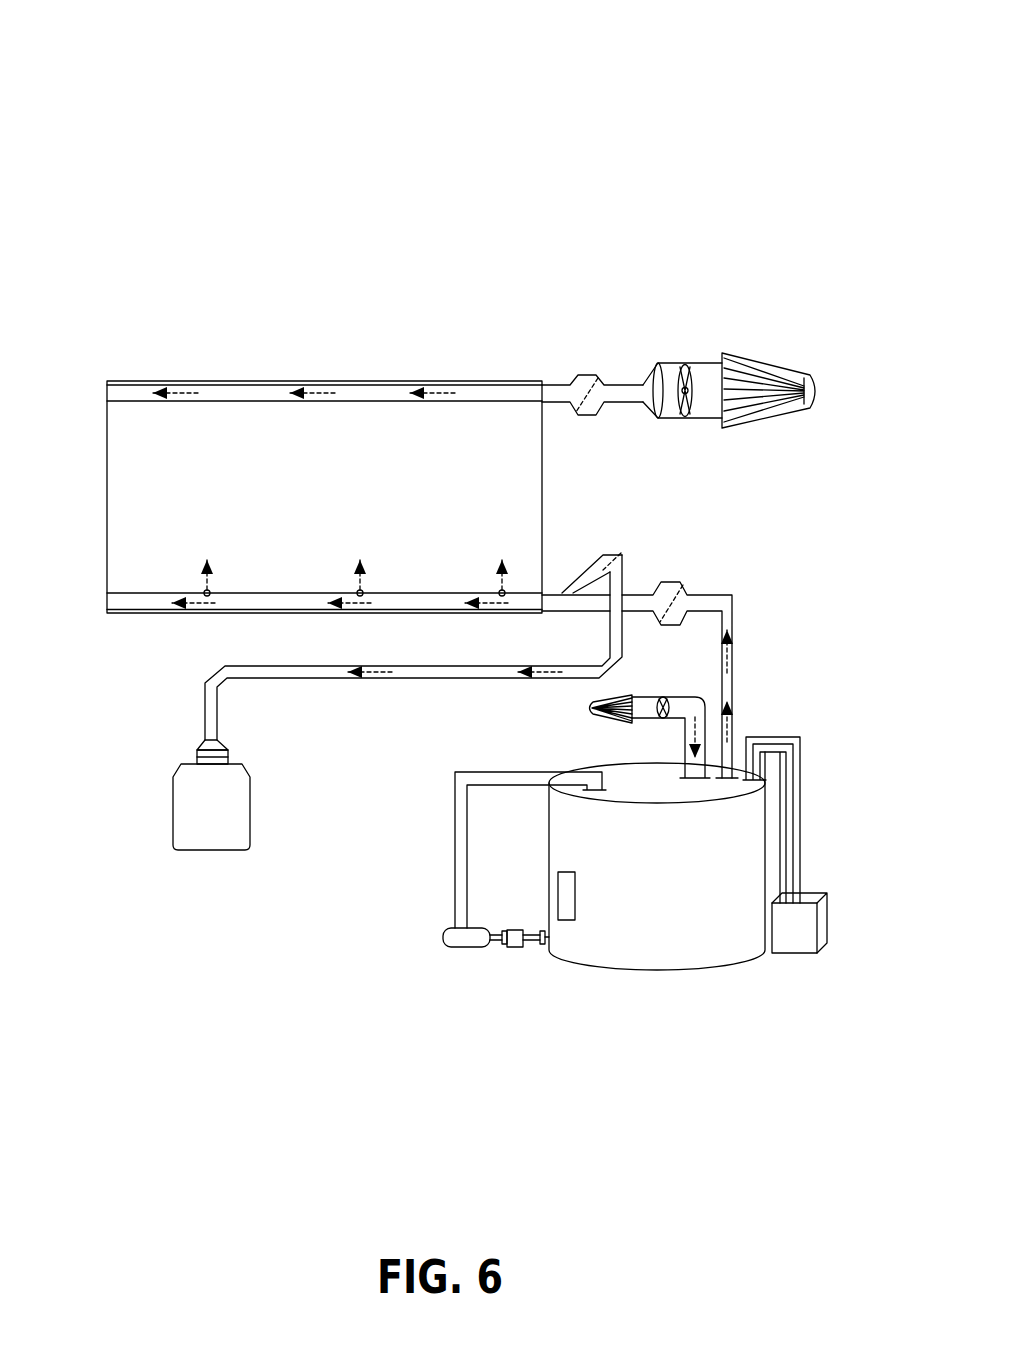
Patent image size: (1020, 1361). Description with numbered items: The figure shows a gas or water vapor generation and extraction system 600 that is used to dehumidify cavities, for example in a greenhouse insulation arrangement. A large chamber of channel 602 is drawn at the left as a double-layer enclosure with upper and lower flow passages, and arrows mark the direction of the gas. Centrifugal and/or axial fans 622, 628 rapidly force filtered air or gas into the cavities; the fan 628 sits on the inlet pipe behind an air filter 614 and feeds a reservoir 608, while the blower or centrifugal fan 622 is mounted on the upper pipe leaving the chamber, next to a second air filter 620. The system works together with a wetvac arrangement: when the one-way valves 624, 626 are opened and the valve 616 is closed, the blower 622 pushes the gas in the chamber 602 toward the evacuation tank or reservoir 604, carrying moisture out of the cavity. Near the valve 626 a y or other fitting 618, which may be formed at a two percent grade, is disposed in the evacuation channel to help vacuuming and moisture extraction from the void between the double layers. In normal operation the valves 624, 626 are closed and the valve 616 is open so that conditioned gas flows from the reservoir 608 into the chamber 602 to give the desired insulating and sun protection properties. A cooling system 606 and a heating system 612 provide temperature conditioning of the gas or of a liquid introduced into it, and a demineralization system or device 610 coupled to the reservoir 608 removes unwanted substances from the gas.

The gas or water vapor generation and extraction system 600 is at (840, 82).
The chamber of channel 602 is at (106, 425).
The evacuation tank or reservoir 604 is at (173, 803).
The cooling system 606 is at (826, 906).
The reservoir 608 is at (663, 966).
The demineralization system or device 610 is at (463, 949).
The heating system 612 is at (576, 886).
The air filter 614 is at (590, 715).
The valve 616 is at (668, 582).
The y or other fitting 618 is at (563, 592).
The air filter 620 is at (814, 376).
The blower or centrifugal fan 622 is at (697, 362).
The one-way valve 624 is at (577, 377).
The one-way valve 626 is at (618, 553).
The axial fan 628 is at (663, 696).